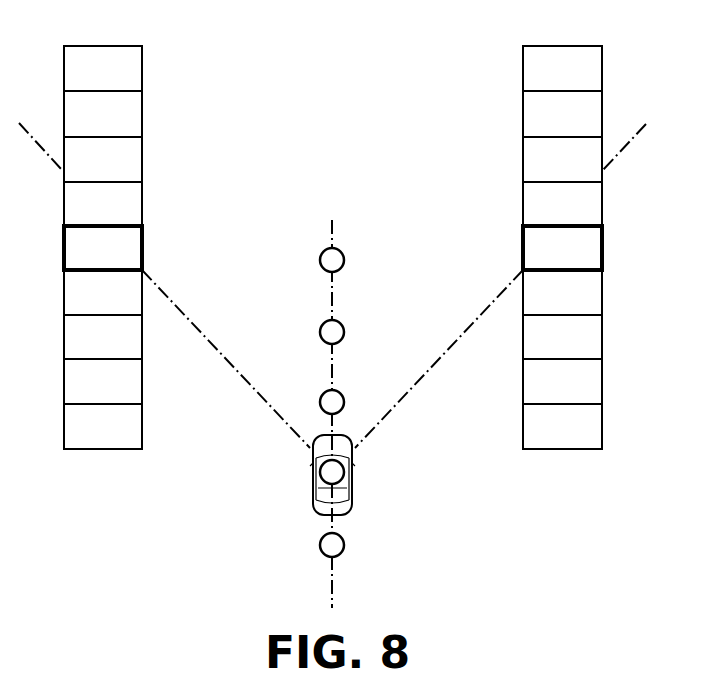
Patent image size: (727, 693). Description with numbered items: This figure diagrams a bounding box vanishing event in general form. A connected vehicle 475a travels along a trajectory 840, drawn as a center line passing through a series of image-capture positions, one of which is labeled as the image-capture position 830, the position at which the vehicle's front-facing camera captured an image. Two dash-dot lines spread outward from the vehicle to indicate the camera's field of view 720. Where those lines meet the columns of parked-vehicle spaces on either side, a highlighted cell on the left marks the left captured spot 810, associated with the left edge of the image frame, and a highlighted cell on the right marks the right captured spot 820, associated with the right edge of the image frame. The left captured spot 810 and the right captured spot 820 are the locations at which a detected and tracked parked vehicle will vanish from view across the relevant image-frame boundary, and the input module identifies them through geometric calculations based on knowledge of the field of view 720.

The left captured spot 810 is at (143, 246).
The right captured spot 820 is at (522, 245).
The image-capture position 830 is at (344, 262).
The field of view 720 is at (411, 381).
The connected vehicle 475a is at (352, 483).
The trajectory 840 is at (336, 574).